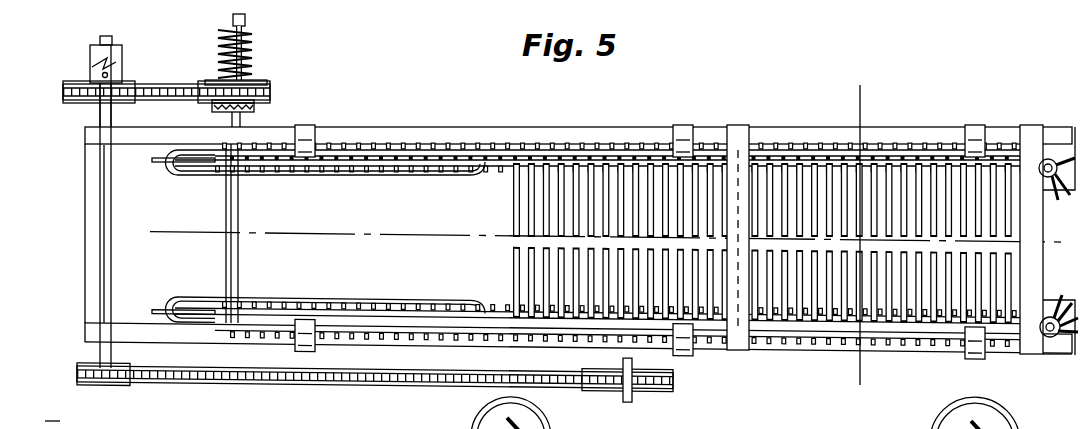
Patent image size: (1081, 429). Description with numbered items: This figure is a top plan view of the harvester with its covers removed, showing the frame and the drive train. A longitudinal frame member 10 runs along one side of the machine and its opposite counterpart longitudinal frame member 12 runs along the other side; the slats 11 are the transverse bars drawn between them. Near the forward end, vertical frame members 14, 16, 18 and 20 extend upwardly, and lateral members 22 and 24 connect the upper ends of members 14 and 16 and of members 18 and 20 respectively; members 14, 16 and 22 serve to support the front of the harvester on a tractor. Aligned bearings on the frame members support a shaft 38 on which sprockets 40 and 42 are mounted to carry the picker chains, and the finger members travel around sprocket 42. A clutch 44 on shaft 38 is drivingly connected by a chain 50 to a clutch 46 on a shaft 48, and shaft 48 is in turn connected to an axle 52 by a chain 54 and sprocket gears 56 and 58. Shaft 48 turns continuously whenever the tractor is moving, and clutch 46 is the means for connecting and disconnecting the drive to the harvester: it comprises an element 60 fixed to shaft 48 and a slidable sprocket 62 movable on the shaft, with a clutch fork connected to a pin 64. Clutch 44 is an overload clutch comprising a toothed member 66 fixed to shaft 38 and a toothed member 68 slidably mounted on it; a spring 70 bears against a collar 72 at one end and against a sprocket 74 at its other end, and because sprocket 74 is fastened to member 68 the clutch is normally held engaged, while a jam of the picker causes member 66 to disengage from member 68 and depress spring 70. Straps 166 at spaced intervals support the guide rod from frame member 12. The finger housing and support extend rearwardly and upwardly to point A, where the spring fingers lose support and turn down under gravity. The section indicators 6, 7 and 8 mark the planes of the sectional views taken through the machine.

The longitudinal frame member 10 is at (800, 345).
The slat 11 is at (990, 232).
The longitudinal frame member 12 is at (785, 129).
The vertical frame member 14 is at (1034, 356).
The vertical frame member 16 is at (740, 348).
The vertical frame member 18 is at (1033, 126).
The vertical frame member 20 is at (742, 125).
The lateral member 22 is at (1034, 230).
The lateral member 24 is at (725, 133).
The shaft 38 is at (226, 214).
The sprocket 40 is at (254, 300).
The sprocket 42 is at (263, 178).
The clutch 44 is at (252, 46).
The clutch 46 is at (128, 61).
The shaft 48 is at (113, 209).
The chain 50 is at (171, 87).
The axle 52 is at (633, 389).
The chain 54 is at (181, 381).
The sprocket gear 56 is at (118, 384).
The sprocket gear 58 is at (590, 366).
The clutch element 60 is at (92, 55).
The slidable sprocket 62 is at (93, 72).
The pin 64 is at (112, 75).
The toothed member 66 is at (255, 108).
The toothed member 68 is at (213, 102).
The spring 70 is at (247, 47).
The collar 72 is at (223, 35).
The sprocket 74 is at (266, 84).
The strap 166 is at (679, 125).
The section line 6 is at (551, 229).
The section line 7 is at (866, 96).
The section line 8 is at (160, 219).
The point A is at (496, 295).